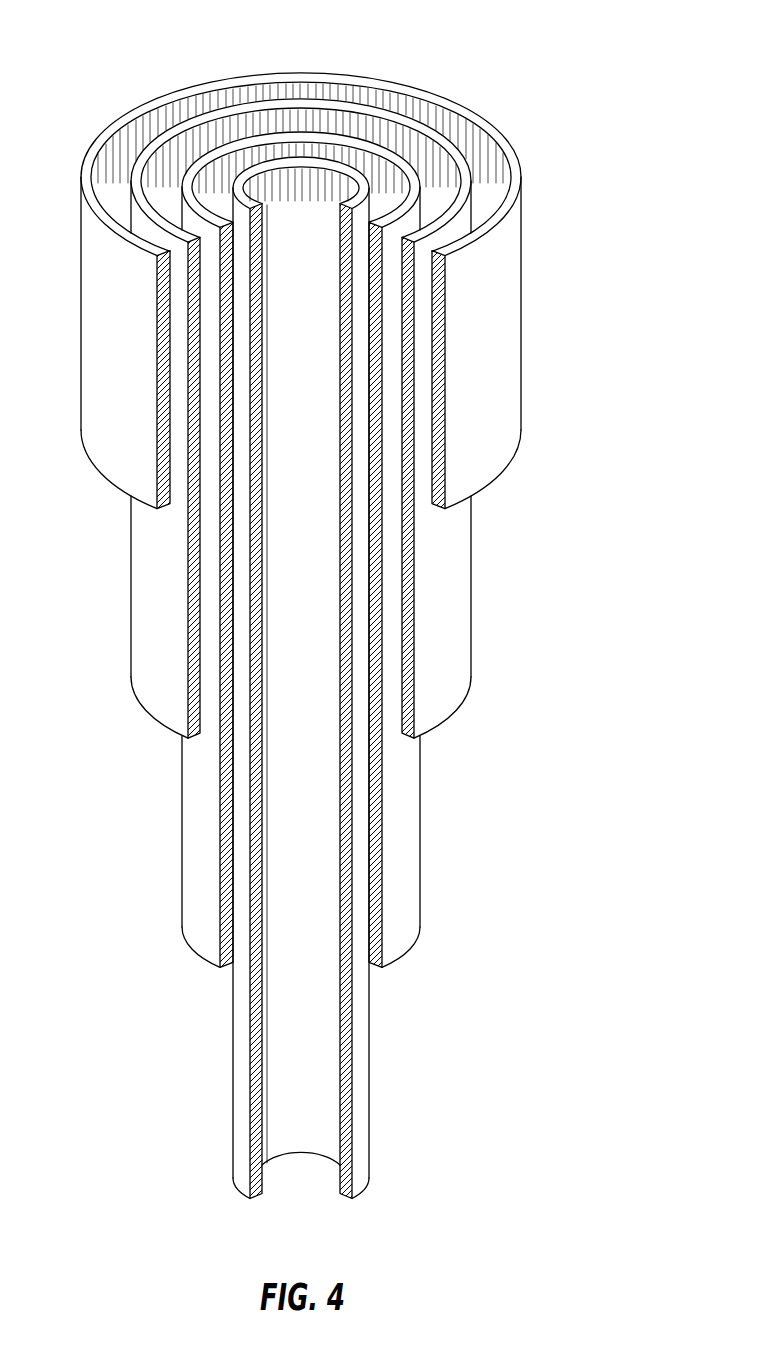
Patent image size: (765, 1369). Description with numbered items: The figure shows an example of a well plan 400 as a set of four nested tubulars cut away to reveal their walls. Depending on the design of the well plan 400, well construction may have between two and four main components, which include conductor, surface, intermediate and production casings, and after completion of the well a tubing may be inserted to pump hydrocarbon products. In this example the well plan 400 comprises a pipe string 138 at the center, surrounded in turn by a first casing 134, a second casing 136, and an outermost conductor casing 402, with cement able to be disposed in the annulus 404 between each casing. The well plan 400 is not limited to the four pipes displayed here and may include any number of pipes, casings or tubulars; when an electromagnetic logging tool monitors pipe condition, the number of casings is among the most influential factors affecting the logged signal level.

The well plan 400 is at (127, 46).
The conductor casing 402 is at (498, 359).
The annulus 404 is at (313, 137).
The second casing 136 is at (451, 582).
The first casing 134 is at (403, 821).
The pipe string 138 is at (359, 1083).